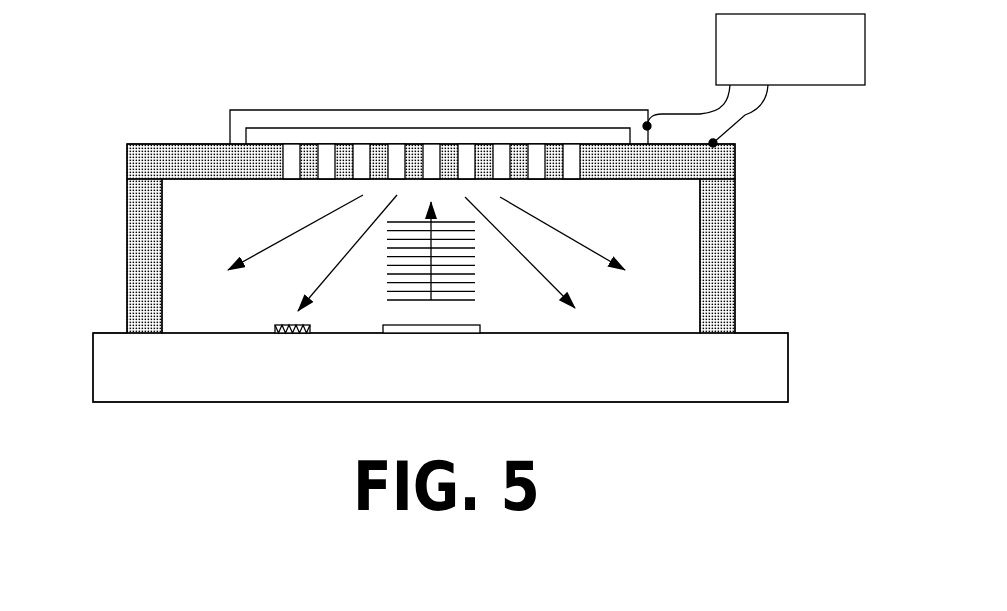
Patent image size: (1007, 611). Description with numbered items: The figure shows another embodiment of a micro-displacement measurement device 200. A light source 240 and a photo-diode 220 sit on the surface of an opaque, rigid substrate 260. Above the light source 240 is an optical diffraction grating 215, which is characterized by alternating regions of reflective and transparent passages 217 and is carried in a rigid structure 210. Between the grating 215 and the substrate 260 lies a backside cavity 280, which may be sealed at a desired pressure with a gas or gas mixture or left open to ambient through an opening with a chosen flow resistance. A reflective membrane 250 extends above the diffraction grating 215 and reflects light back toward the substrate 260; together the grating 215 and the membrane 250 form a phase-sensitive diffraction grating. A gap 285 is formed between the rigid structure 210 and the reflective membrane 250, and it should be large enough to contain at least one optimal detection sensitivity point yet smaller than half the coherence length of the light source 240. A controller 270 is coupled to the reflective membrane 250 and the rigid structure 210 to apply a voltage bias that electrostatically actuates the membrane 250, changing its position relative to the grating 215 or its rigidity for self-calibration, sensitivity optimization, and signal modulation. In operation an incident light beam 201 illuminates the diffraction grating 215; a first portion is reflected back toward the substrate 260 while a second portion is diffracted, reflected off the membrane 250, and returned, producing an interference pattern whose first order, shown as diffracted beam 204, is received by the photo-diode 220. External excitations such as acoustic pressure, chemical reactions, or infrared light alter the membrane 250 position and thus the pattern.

The micro-displacement measurement device 200 is at (438, 68).
The incident light beam 201 is at (456, 262).
The diffracted beam (-1 order) 204 is at (343, 258).
The rigid structure 210 is at (153, 143).
The optical diffraction grating 215 is at (546, 199).
The transparent passages 217 is at (501, 146).
The photo-diode 220 is at (290, 336).
The light source 240 is at (430, 333).
The reflective membrane 250 is at (282, 110).
The substrate 260 is at (778, 391).
The controller 270 is at (862, 83).
The backside cavity 280 is at (174, 226).
The gap 285 is at (289, 140).